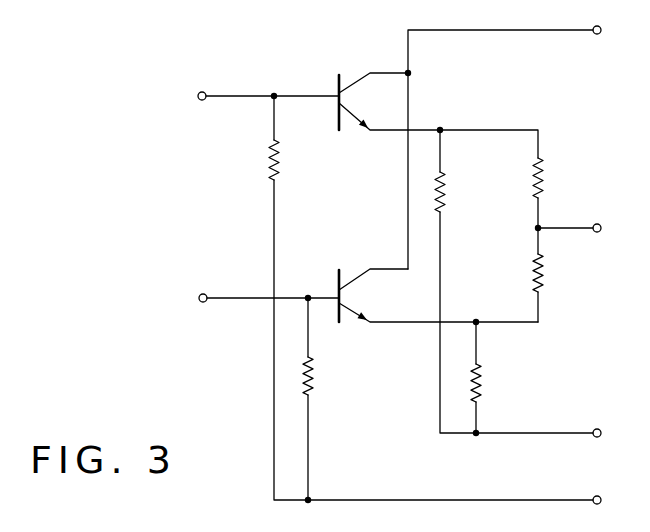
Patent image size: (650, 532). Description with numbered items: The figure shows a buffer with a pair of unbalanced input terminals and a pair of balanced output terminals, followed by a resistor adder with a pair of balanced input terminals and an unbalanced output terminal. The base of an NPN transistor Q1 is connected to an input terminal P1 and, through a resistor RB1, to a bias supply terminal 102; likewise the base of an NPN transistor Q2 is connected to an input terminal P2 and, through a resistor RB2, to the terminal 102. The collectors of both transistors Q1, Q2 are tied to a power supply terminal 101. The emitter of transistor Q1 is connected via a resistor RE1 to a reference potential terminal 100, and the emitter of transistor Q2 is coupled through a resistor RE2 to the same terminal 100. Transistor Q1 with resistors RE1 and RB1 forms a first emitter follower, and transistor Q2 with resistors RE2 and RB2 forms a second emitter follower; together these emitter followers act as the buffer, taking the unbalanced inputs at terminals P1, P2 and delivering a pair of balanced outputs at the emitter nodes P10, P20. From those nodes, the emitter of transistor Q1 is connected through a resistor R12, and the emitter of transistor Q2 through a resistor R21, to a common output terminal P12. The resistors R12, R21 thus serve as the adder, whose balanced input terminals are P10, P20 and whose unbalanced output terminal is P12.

The input terminal P1 is at (202, 91).
The input terminal P2 is at (203, 292).
The NPN transistor Q1 is at (349, 80).
The NPN transistor Q2 is at (349, 276).
The resistor RB1 is at (268, 163).
The resistor RB2 is at (316, 380).
The resistor RE1 is at (447, 192).
The resistor RE2 is at (484, 385).
The resistor R12 is at (546, 176).
The resistor R21 is at (546, 278).
The balanced output terminal P10 is at (440, 126).
The balanced output terminal P20 is at (476, 320).
The output terminal P12 is at (597, 236).
The reference potential terminal 100 is at (597, 428).
The power supply terminal 101 is at (597, 38).
The bias supply terminal 102 is at (597, 495).